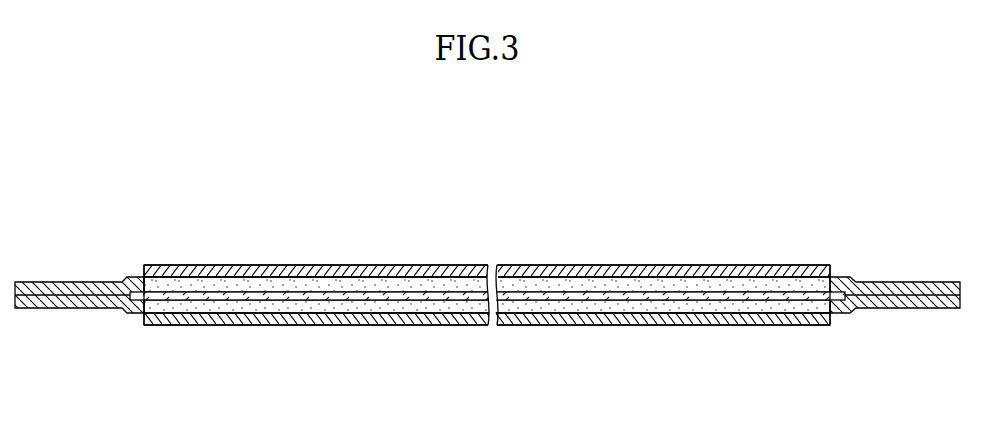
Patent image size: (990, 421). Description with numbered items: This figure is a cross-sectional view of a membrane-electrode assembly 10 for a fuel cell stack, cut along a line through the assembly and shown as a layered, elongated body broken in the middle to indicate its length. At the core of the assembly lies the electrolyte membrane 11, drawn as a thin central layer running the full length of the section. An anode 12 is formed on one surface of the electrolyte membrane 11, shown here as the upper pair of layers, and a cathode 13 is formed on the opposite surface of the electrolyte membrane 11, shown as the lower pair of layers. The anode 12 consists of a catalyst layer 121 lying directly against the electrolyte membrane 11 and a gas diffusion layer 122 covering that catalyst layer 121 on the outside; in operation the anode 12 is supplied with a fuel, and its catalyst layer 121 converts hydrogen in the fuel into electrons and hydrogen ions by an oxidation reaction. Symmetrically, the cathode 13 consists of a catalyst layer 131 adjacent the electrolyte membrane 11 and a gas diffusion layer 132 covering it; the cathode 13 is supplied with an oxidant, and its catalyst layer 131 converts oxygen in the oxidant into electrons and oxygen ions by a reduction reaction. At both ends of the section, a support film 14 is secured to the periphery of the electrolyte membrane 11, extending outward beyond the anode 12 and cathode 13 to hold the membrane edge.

The membrane-electrode assembly 10 is at (487, 287).
The electrolyte membrane 11 is at (672, 296).
The anode 12 is at (487, 231).
The catalyst layer 121 is at (343, 206).
The gas diffusion layer 122 is at (362, 272).
The cathode 13 is at (487, 360).
The catalyst layer 131 is at (412, 305).
The gas diffusion layer 132 is at (362, 315).
The support film 14 is at (40, 288).